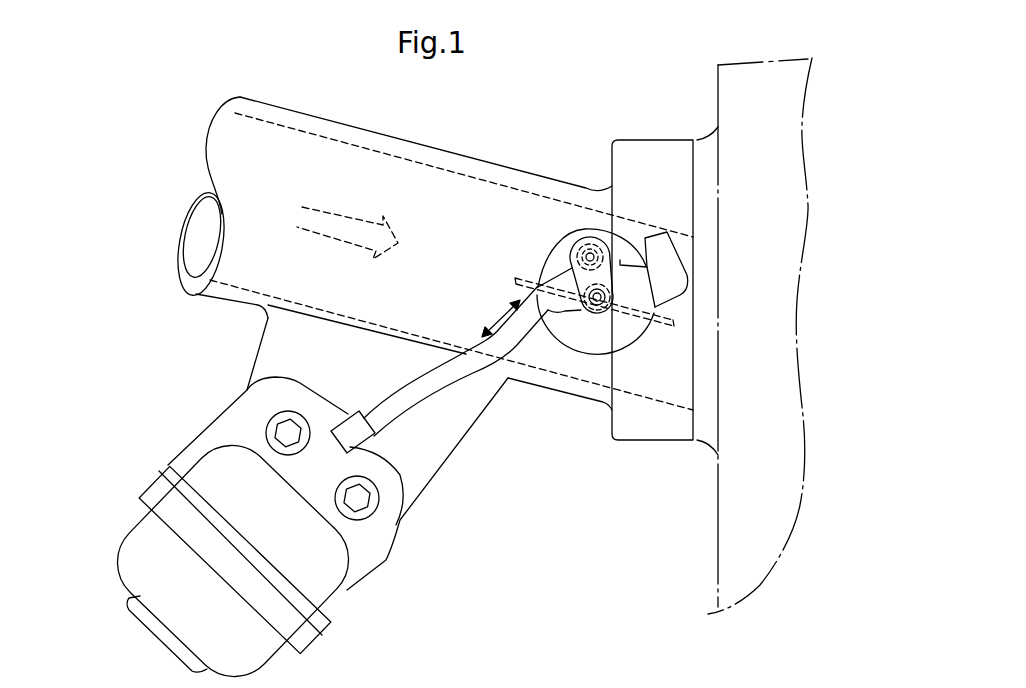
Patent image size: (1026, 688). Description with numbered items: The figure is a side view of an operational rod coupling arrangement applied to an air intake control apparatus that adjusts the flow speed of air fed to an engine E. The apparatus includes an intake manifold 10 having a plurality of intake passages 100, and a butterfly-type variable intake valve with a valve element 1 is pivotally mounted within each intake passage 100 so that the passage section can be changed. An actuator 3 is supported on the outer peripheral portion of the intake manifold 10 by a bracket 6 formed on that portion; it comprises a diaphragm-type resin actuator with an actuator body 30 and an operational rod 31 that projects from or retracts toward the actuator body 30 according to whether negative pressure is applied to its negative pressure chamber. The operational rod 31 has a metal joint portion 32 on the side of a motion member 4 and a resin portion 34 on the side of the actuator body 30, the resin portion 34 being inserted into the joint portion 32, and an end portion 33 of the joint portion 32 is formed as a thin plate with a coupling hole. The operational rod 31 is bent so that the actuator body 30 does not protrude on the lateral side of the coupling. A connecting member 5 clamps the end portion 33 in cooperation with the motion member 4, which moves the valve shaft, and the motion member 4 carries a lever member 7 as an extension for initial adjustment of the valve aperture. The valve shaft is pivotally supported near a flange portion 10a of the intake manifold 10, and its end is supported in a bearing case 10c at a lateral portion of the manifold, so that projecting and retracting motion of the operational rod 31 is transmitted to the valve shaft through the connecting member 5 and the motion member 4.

The valve element 1 is at (541, 282).
The actuator 3 is at (123, 521).
The motion member 4 is at (587, 327).
The connecting member 5 is at (589, 237).
The bracket 6 is at (253, 353).
The lever member 7 is at (648, 236).
The intake manifold 10 is at (458, 152).
The flange portion 10a is at (648, 145).
The bearing case 10c is at (625, 340).
The actuator body 30 is at (342, 579).
The operational rod 31 is at (516, 459).
The joint portion 32 is at (457, 383).
The end portion 33 is at (555, 270).
The resin portion 34 is at (350, 447).
The intake passage 100 is at (358, 175).
The engine E is at (712, 497).